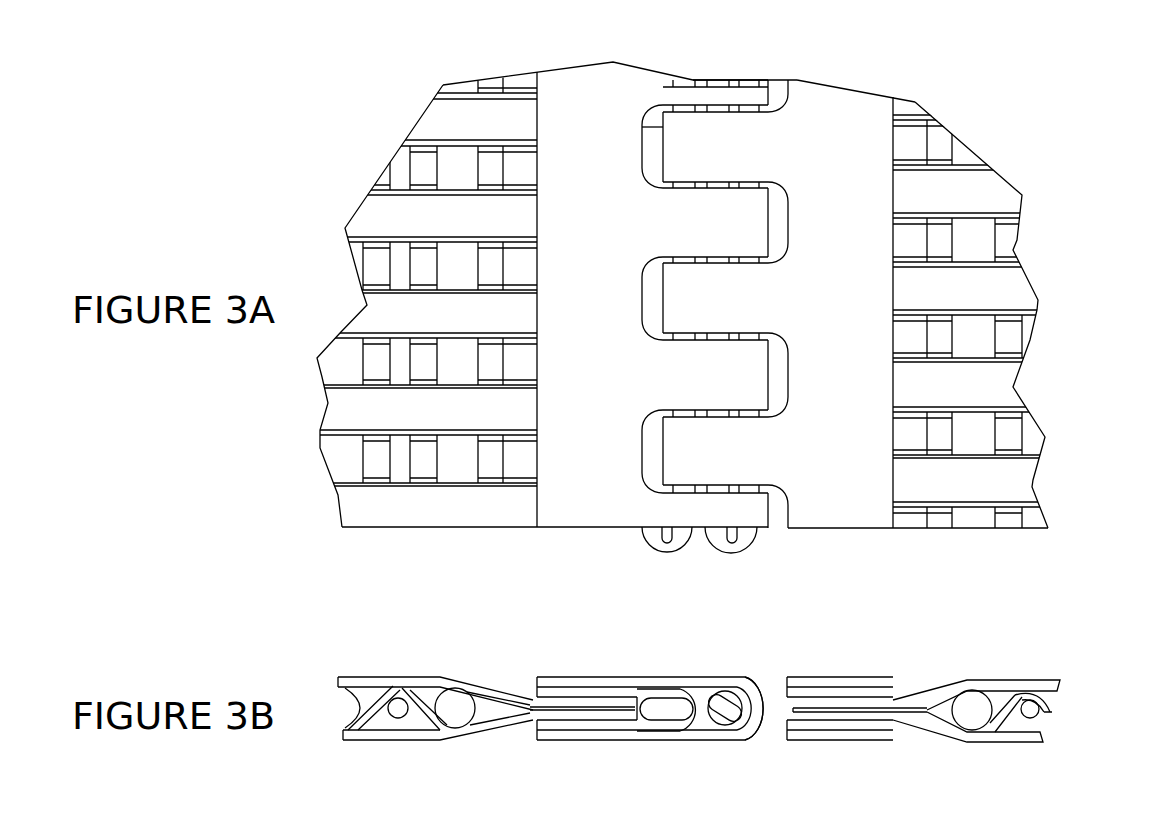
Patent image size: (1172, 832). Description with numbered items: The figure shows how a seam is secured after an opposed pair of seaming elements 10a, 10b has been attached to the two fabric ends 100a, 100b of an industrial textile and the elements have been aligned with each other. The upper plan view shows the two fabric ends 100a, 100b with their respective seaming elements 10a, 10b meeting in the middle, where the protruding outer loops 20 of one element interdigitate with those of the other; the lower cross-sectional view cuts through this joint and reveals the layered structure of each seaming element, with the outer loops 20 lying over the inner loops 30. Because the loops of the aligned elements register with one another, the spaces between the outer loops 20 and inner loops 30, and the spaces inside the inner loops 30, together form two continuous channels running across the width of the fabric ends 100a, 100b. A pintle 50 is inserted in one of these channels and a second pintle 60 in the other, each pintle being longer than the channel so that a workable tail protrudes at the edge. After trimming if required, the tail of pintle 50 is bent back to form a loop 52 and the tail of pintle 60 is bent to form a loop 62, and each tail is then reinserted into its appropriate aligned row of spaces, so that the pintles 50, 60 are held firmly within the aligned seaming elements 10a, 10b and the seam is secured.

In FIG. 3A, the fabric end 100a is at (370, 135).
In FIG. 3A, the fabric end 100b is at (1020, 135).
In FIG. 3A, the seaming element 10a is at (580, 68).
In FIG. 3A, the seaming element 10b is at (840, 85).
In FIG. 3A, the outer loops 20 is at (703, 225).
In FIG. 3B, the outer loops 20 is at (738, 690).
In FIG. 3B, the inner loops 30 is at (668, 695).
In FIG. 3A, the pintle 50 is at (740, 548).
In FIG. 3A, the loop 52 is at (717, 542).
In FIG. 3B, the loop 52 is at (750, 715).
In FIG. 3A, the pintle 60 is at (680, 550).
In FIG. 3A, the loop 62 is at (645, 530).
In FIG. 3B, the loop 62 is at (677, 703).